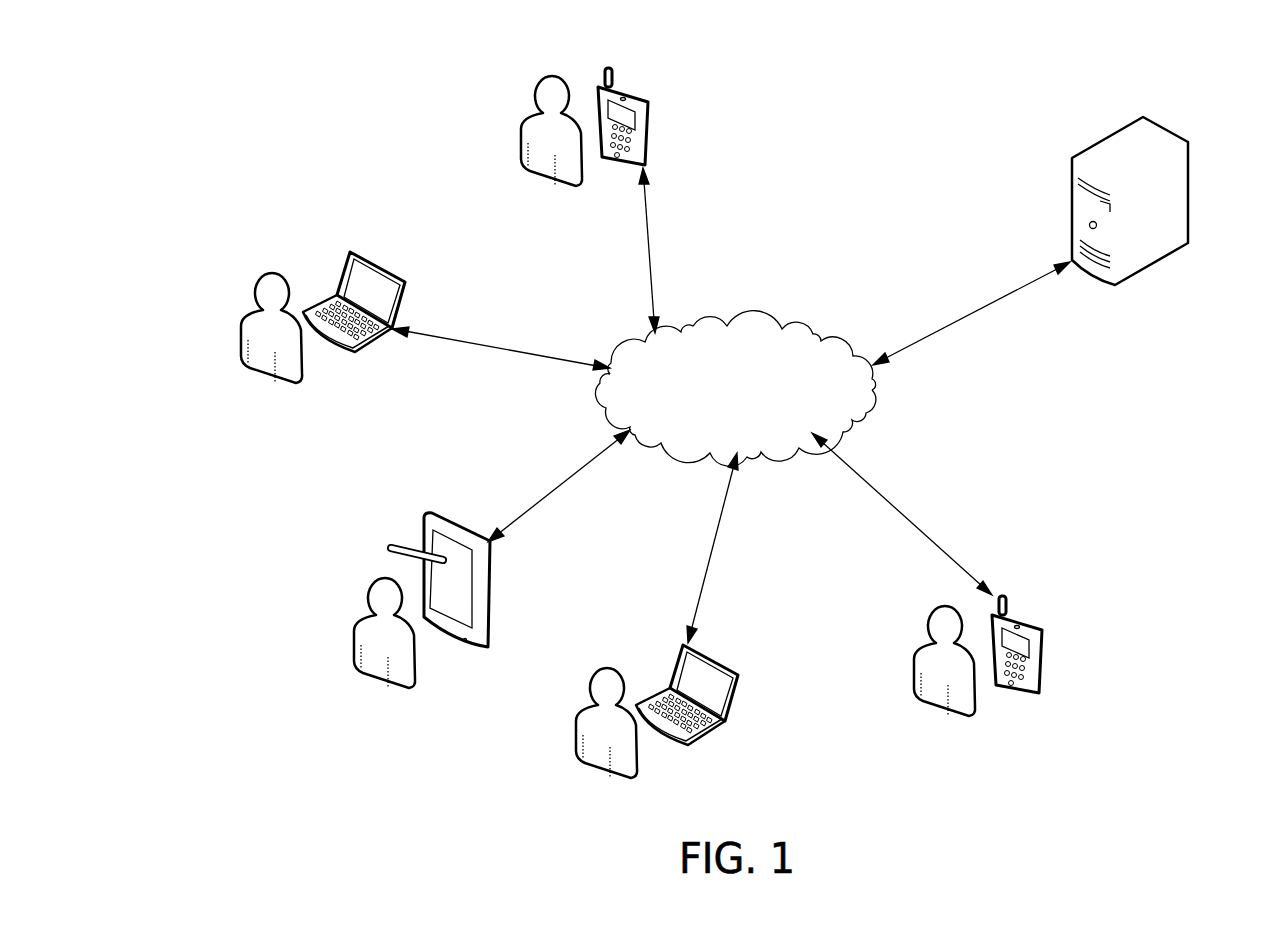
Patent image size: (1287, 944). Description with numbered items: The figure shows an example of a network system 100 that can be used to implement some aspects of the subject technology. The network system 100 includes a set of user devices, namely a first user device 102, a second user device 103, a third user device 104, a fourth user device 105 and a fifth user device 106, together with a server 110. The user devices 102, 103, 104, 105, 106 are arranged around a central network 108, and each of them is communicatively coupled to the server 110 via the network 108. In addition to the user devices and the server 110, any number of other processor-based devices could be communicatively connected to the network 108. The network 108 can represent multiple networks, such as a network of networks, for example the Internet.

The network system 100 is at (882, 62).
The first user device 102 is at (637, 92).
The second user device 103 is at (406, 282).
The third user device 104 is at (433, 512).
The fourth user device 105 is at (742, 673).
The fifth user device 106 is at (1027, 620).
The network 108 is at (735, 325).
The server 110 is at (1143, 117).